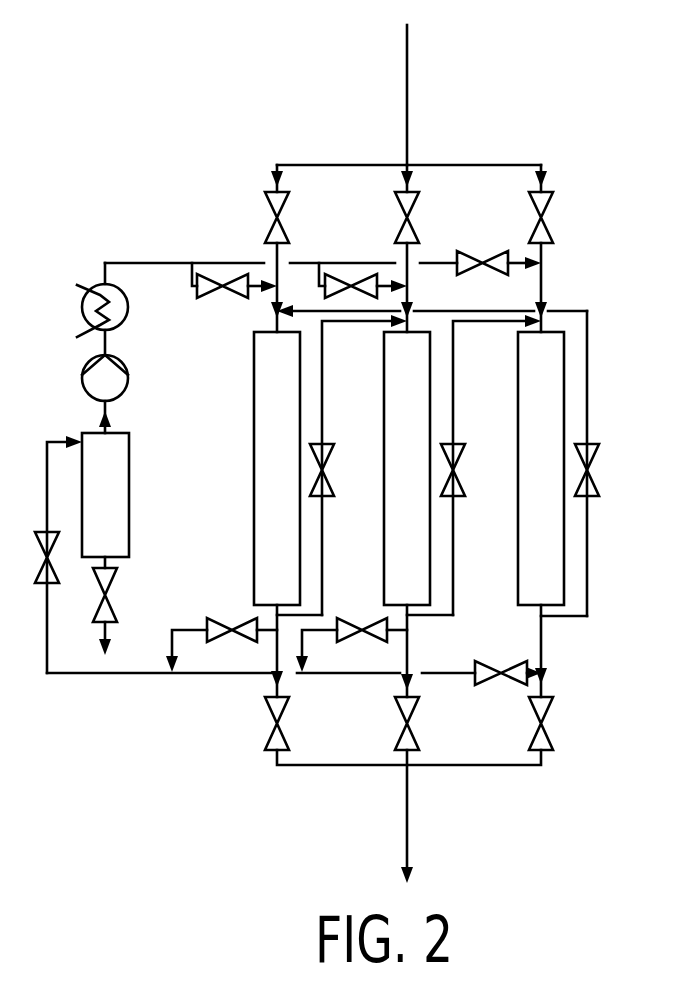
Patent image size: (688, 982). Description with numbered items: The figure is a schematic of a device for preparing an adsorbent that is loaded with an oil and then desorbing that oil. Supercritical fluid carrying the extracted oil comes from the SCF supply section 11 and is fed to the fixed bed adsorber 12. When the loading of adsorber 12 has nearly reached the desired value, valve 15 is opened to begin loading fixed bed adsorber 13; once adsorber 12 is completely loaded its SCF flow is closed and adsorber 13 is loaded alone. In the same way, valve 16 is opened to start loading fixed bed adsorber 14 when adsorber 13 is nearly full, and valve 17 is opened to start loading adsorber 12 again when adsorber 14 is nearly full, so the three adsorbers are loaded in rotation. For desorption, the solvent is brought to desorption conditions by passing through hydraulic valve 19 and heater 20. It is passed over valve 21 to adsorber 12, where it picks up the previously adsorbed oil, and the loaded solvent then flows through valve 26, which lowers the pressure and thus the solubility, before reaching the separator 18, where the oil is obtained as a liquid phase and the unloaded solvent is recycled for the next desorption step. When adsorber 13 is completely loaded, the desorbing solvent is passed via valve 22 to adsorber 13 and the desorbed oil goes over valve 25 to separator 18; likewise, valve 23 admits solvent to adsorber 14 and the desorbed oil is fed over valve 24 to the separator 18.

The SCF supply section 11 is at (407, 62).
The fixed bed adsorber 12 is at (285, 487).
The fixed bed adsorber 13 is at (417, 487).
The fixed bed adsorber 14 is at (552, 487).
The valve 15 is at (326, 468).
The valve 16 is at (457, 468).
The valve 17 is at (590, 468).
The separator 18 is at (117, 494).
The hydraulic valve 19 is at (82, 385).
The heater 20 is at (73, 312).
The valve 21 is at (222, 292).
The valve 22 is at (352, 282).
The valve 23 is at (484, 258).
The valve 24 is at (501, 670).
The valve 25 is at (362, 634).
The valve 26 is at (232, 634).